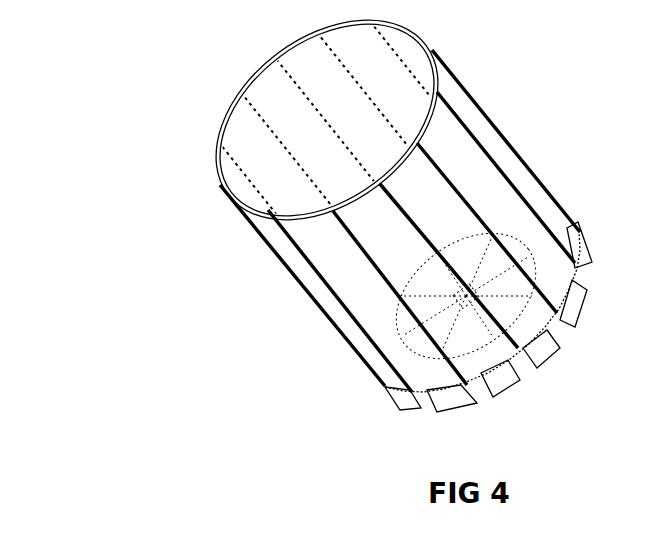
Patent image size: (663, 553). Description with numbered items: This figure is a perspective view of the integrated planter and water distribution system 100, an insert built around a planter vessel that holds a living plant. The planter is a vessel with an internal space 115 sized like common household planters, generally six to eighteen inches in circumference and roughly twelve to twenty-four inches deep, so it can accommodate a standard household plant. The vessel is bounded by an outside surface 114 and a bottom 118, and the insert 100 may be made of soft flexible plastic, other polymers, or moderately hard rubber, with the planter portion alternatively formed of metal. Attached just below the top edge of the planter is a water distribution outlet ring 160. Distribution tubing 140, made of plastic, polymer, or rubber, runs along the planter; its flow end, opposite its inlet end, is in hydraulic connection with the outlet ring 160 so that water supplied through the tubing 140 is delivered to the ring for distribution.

The integrated planter and water distribution system 100 is at (188, 54).
The internal space 115 is at (313, 130).
The water distribution outlet ring 160 is at (220, 143).
The distribution tubing 140 is at (323, 272).
The outside surface 114 is at (370, 302).
The bottom 118 is at (443, 388).